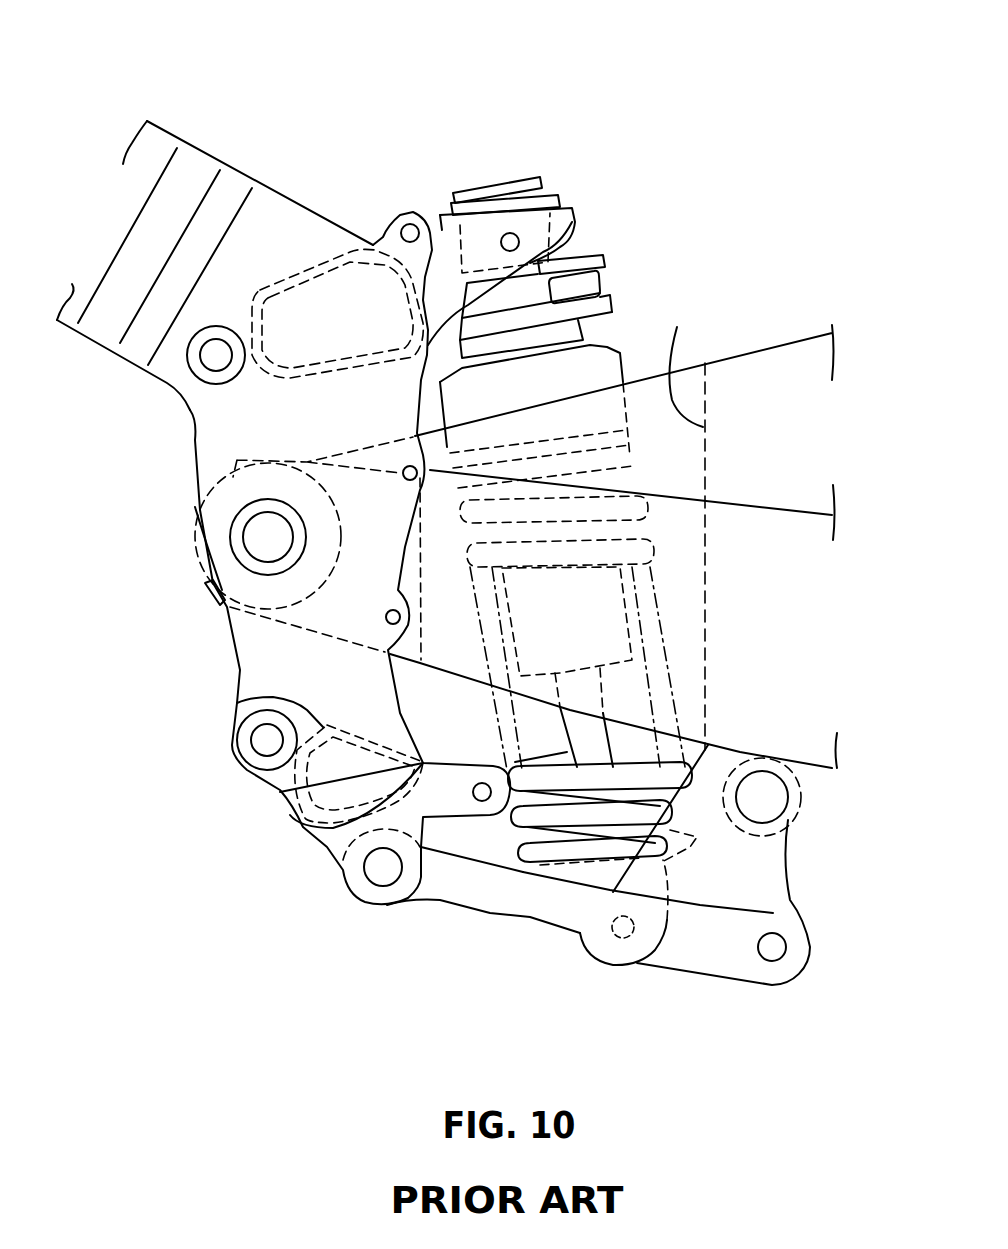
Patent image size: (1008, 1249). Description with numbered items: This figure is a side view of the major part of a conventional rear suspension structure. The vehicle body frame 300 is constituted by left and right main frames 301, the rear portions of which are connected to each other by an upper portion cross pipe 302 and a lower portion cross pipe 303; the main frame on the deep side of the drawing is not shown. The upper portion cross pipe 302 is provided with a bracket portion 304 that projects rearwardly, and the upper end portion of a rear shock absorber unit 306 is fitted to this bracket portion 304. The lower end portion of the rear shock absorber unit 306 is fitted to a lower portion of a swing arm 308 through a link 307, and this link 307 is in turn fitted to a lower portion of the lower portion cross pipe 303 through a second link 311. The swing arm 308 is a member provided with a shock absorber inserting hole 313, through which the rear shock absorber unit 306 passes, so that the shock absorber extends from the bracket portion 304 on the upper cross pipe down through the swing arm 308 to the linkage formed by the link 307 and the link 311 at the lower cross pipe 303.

The vehicle body frame 300 is at (160, 116).
The main frame 301 is at (187, 433).
The upper portion cross pipe 302 is at (307, 268).
The lower portion cross pipe 303 is at (237, 702).
The bracket portion 304 is at (479, 188).
The rear shock absorber unit 306 is at (607, 280).
The link 307 is at (788, 878).
The swing arm 308 is at (802, 333).
The link 311 is at (477, 907).
The shock absorber inserting hole 313 is at (677, 327).